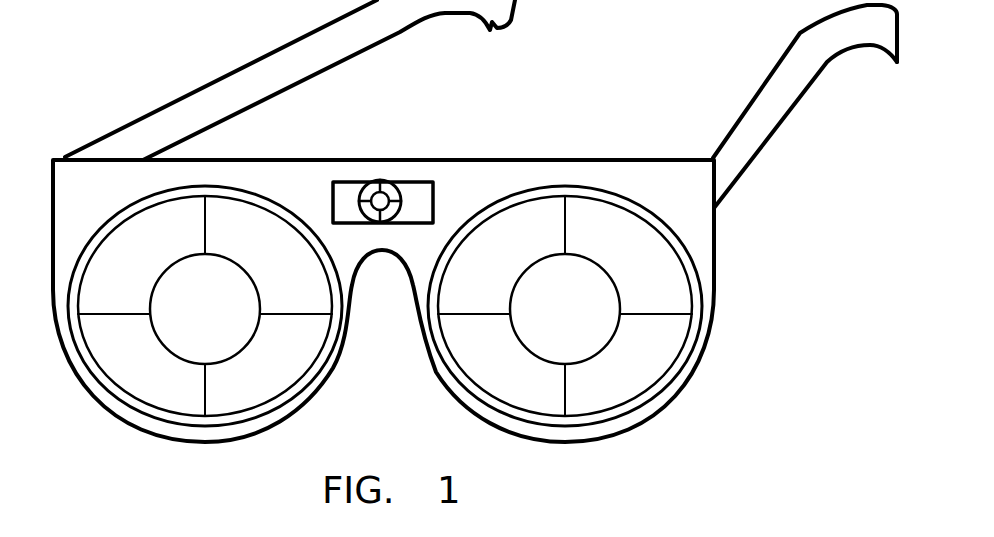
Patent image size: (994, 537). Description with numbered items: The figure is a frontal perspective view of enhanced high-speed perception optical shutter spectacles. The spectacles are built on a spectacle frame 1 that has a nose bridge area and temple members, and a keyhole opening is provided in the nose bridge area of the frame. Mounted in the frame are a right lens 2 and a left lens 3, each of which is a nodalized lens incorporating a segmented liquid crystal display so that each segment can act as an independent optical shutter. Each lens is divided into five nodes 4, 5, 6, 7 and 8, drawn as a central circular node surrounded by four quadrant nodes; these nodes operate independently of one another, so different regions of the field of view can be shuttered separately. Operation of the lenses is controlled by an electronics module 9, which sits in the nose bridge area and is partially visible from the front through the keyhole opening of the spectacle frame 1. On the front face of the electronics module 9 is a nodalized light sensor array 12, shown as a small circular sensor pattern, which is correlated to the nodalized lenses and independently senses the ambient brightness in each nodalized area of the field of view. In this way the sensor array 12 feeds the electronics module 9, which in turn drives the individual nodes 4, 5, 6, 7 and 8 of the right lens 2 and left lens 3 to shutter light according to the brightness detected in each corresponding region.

The spectacle frame 1 is at (90, 158).
The right lens 2 is at (152, 419).
The left lens 3 is at (685, 390).
The node 4 is at (184, 320).
The node 5 is at (448, 255).
The node 6 is at (448, 365).
The node 7 is at (321, 365).
The node 8 is at (321, 255).
The electronics module 9 is at (334, 182).
The nodalized light sensor array 12 is at (382, 181).